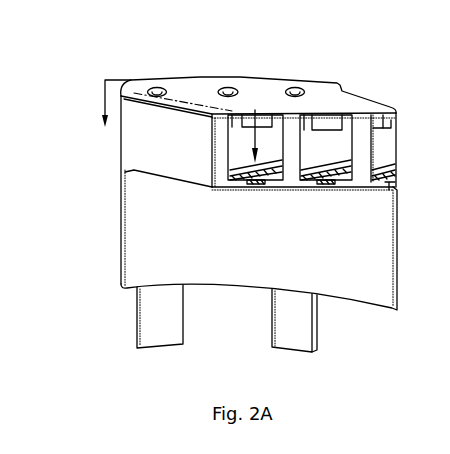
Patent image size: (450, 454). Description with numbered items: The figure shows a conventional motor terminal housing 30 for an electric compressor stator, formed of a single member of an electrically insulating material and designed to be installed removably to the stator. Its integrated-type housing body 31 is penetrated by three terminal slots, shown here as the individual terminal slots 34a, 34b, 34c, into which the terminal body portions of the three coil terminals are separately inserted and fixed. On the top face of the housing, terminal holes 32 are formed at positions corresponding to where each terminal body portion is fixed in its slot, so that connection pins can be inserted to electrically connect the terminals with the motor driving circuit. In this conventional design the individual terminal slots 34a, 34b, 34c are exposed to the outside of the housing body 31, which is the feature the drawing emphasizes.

The terminal housing 30 is at (108, 276).
The housing body 31 is at (137, 219).
The terminal hole 32 is at (293, 89).
The terminal slot 34a is at (267, 167).
The terminal slot 34b is at (337, 153).
The terminal slot 34c is at (380, 133).